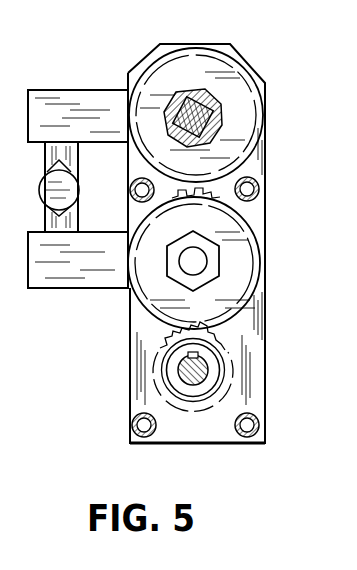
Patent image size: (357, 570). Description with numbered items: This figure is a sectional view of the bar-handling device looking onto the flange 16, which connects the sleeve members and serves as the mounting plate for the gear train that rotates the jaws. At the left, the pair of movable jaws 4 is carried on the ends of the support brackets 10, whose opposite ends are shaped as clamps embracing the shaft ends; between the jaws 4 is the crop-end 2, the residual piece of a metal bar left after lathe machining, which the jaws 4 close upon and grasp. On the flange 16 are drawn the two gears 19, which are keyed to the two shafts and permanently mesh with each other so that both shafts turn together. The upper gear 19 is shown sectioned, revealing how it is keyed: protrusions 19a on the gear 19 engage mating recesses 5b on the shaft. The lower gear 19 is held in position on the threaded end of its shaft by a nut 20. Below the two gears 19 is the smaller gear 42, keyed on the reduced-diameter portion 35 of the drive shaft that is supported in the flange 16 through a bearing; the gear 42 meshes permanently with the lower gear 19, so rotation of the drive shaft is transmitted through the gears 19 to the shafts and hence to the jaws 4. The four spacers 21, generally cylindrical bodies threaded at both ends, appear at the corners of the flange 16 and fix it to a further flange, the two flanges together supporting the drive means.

The crop-end 2 is at (66, 192).
The movable jaws 4 is at (67, 148).
The recesses 5b is at (222, 126).
The support brackets 10 is at (104, 105).
The flange 16 is at (197, 433).
The gear 19 is at (236, 90).
The protrusions 19a is at (222, 110).
The nut 20 is at (192, 247).
The spacers 21 is at (256, 184).
The reduced-diameter portion of shaft 35 is at (180, 374).
The gear 42 is at (227, 358).